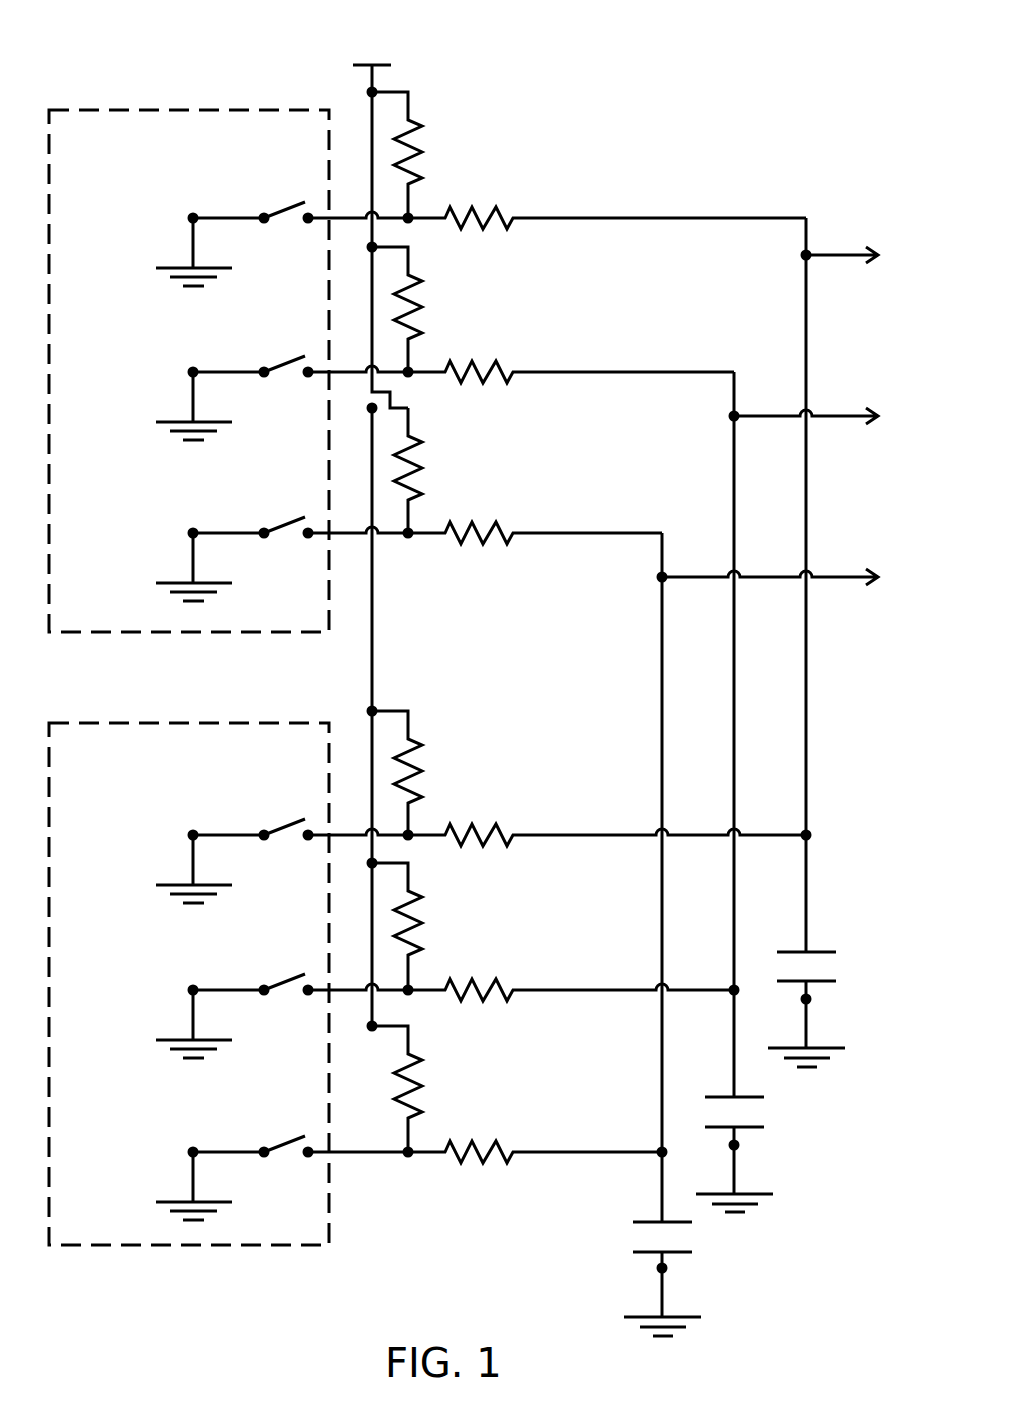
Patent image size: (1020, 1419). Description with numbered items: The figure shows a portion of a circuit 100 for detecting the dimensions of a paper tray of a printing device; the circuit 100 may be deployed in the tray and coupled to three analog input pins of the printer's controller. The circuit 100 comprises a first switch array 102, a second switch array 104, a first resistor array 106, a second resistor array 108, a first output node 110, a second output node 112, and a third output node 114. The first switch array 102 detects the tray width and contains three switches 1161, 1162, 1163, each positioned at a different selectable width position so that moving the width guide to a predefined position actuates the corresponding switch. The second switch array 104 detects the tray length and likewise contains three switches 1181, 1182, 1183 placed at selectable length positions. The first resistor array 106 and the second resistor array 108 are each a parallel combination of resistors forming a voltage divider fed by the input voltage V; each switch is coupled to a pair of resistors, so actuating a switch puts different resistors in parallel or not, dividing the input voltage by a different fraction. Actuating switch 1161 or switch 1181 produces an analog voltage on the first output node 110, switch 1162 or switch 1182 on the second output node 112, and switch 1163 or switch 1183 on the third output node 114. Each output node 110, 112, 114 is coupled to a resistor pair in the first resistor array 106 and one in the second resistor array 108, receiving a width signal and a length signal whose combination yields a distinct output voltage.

The circuit 100 is at (125, 33).
The first switch array 102 is at (205, 146).
The second switch array 104 is at (205, 757).
The first resistor array 106 is at (434, 160).
The second resistor array 108 is at (425, 1215).
The first output node 110 is at (808, 250).
The second output node 112 is at (736, 412).
The third output node 114 is at (664, 572).
The switch 1161 is at (202, 186).
The switch 1162 is at (179, 346).
The switch 1163 is at (176, 509).
The switch 1181 is at (206, 806).
The switch 1182 is at (181, 962).
The switch 1183 is at (176, 1127).